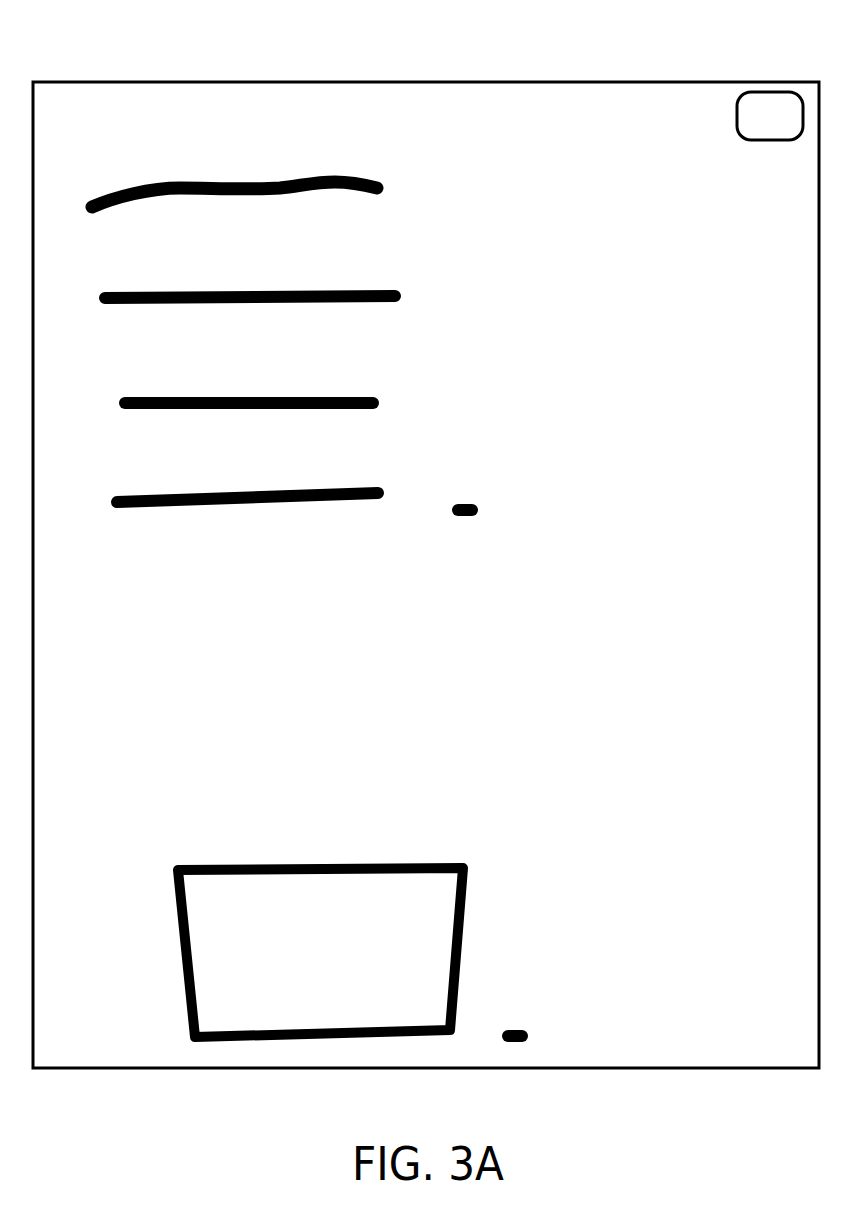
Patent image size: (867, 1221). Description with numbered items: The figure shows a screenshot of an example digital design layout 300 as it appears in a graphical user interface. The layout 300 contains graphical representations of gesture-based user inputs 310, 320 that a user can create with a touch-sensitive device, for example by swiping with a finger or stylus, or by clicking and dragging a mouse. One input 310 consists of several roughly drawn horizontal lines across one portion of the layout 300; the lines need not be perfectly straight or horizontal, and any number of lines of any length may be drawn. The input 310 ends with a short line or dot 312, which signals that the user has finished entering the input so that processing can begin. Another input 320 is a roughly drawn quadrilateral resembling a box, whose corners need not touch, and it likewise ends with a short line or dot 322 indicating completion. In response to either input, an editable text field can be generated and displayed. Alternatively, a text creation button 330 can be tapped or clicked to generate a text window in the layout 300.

The digital design layout 300 is at (656, 62).
The gesture-based user input 310 is at (424, 146).
The short line or dot 312 is at (474, 490).
The gesture-based user input 320 is at (361, 835).
The short line or dot 322 is at (524, 1018).
The text creation button 330 is at (771, 141).